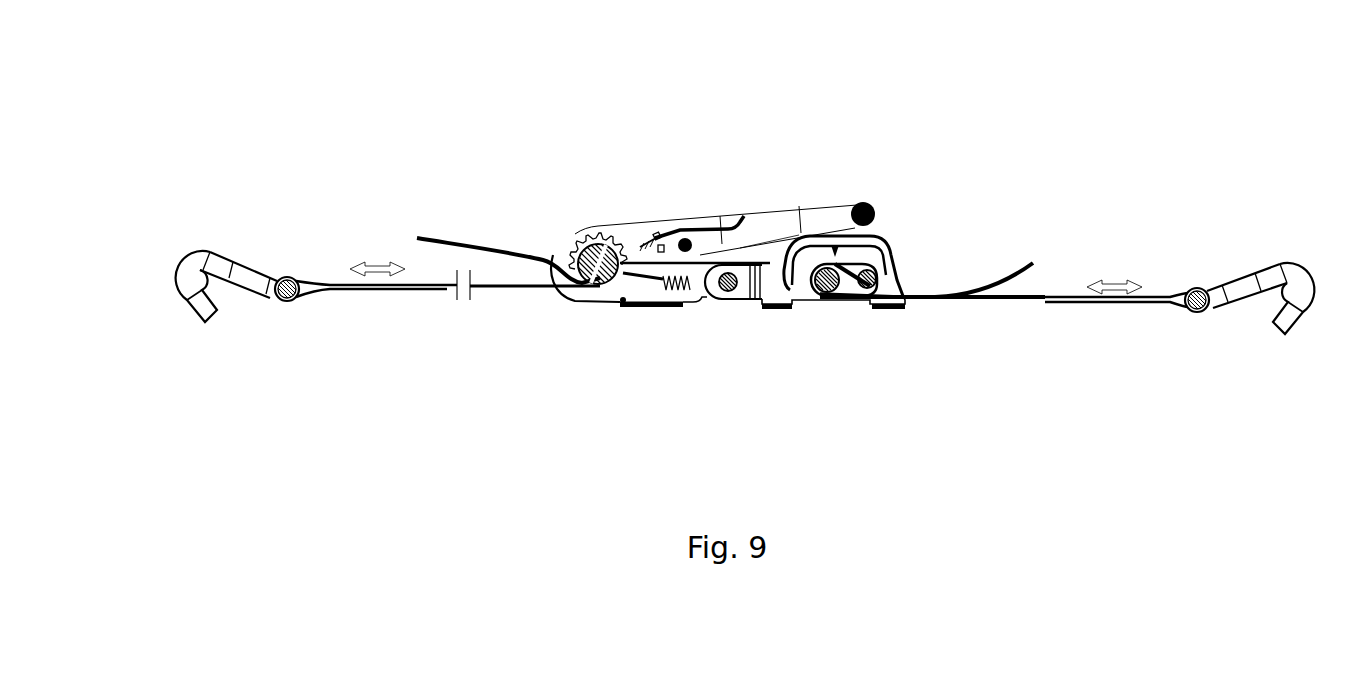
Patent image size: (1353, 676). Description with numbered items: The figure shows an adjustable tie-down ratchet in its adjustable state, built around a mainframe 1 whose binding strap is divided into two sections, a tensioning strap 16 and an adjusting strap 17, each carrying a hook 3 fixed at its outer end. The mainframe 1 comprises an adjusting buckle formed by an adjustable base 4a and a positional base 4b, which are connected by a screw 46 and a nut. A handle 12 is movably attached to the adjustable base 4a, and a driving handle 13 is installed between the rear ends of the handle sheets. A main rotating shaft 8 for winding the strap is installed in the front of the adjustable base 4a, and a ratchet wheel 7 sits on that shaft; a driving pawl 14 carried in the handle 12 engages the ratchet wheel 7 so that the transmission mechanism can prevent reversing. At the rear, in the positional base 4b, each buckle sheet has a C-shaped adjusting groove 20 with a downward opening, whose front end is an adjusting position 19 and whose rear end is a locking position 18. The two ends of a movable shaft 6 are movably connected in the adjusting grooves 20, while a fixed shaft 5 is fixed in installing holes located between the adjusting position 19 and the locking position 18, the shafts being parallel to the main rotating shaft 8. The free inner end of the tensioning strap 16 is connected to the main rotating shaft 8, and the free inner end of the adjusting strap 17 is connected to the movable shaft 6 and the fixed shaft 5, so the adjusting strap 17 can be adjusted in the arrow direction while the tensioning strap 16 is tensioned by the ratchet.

The mainframe 1 is at (625, 181).
The hook 3 is at (205, 255).
The adjustable base 4a is at (591, 303).
The positional base 4b is at (808, 300).
The fixed shaft 5 is at (787, 308).
The movable shaft 6 is at (870, 303).
The ratchet wheel 7 is at (574, 233).
The main rotating shaft 8 is at (568, 252).
The handle 12 is at (787, 223).
The driving handle 13 is at (866, 204).
The driving pawl 14 is at (713, 228).
The tensioning strap 16 is at (457, 247).
The adjusting strap 17 is at (1020, 283).
The locking position 18 is at (878, 263).
The adjusting position 19 is at (767, 250).
The adjusting groove 20 is at (836, 245).
The screw 46 is at (717, 303).